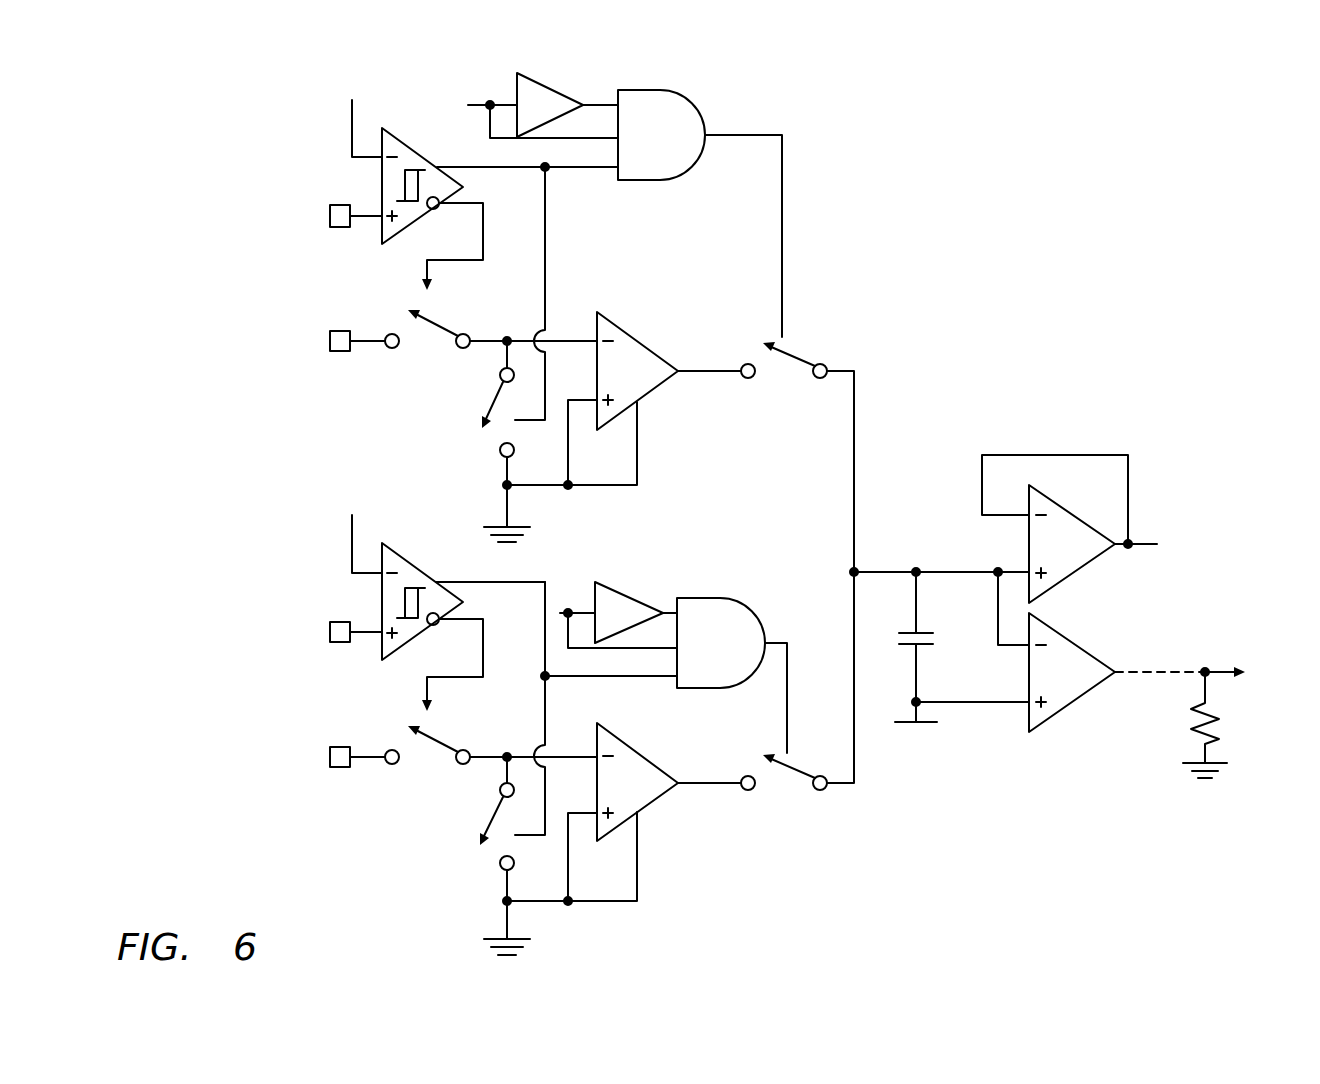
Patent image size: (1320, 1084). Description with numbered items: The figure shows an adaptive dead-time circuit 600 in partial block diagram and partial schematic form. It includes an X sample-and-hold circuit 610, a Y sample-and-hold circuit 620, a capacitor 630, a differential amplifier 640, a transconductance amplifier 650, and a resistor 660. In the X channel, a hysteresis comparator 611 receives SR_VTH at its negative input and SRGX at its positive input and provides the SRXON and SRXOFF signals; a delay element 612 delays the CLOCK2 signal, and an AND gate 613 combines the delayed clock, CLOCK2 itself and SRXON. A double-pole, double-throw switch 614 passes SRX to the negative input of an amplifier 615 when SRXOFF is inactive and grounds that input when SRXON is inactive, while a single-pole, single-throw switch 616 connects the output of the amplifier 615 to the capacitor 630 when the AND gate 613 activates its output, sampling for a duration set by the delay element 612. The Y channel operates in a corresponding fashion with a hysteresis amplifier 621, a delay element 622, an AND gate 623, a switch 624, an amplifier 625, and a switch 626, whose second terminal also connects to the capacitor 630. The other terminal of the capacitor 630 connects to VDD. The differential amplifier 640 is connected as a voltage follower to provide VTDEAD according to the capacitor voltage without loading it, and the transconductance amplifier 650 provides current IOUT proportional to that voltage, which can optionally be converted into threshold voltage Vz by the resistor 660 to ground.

The adaptive dead-time circuit 600 is at (285, 92).
The X sample-and-hold circuit 610 is at (272, 243).
The hysteresis comparator 611 is at (400, 137).
The delay element 612 is at (545, 83).
The AND gate 613 is at (645, 90).
The switch 614 is at (507, 320).
The amplifier 615 is at (625, 328).
The switch 616 is at (803, 350).
The Y sample-and-hold circuit 620 is at (282, 680).
The hysteresis amplifier 621 is at (410, 562).
The delay element 622 is at (625, 590).
The AND gate 623 is at (715, 598).
The switch 624 is at (500, 737).
The amplifier 625 is at (640, 750).
The switch 626 is at (787, 787).
The capacitor 630 is at (930, 633).
The differential amplifier 640 is at (1100, 552).
The transconductance amplifier 650 is at (1068, 707).
The resistor 660 is at (1218, 720).